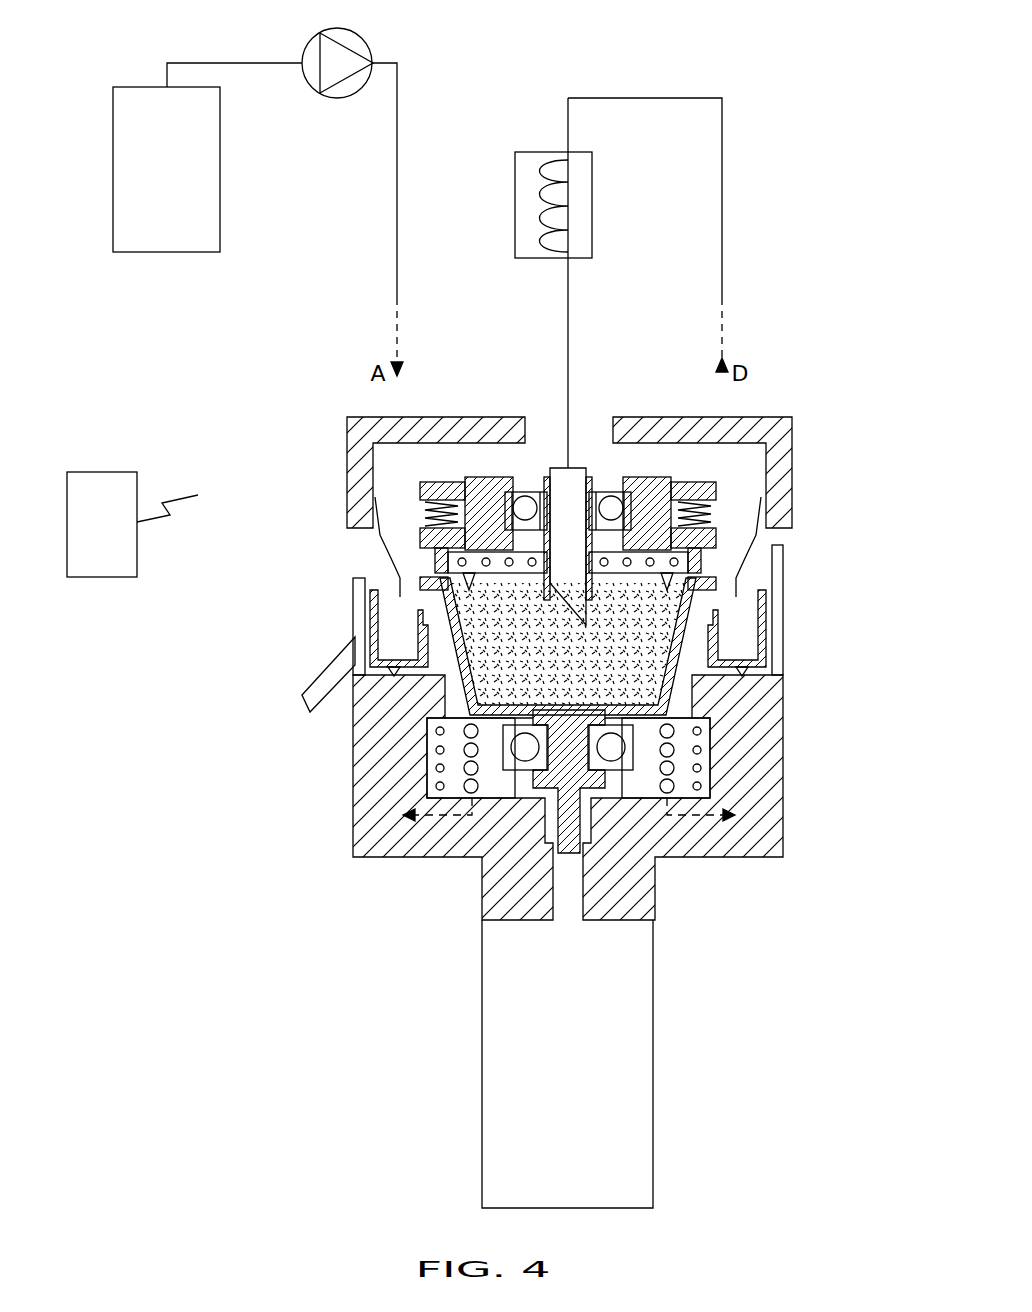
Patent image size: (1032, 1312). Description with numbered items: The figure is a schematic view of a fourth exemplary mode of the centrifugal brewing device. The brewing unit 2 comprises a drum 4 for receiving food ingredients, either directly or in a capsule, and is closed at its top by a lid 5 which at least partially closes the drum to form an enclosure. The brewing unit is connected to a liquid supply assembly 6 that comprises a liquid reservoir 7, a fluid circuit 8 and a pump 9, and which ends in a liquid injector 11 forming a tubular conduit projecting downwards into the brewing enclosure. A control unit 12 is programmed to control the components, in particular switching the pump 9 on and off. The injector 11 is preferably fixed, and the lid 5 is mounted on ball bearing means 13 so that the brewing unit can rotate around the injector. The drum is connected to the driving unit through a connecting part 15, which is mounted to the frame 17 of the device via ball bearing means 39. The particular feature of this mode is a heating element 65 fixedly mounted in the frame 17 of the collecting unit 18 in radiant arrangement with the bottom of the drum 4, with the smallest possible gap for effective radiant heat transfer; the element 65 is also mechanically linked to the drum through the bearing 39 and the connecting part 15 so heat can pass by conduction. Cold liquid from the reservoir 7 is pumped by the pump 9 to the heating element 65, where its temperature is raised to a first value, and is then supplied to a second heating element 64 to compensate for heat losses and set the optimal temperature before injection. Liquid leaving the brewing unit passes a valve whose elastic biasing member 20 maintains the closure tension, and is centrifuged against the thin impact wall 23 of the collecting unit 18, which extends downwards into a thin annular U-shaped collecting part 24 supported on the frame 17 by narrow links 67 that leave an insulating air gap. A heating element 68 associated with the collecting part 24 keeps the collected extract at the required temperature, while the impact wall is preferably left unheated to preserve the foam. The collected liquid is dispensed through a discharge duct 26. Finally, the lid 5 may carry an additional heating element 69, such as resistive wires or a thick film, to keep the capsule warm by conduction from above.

The brewing unit 2 is at (297, 417).
The drum 4 is at (440, 590).
The lid 5 is at (486, 495).
The liquid supply assembly 6 is at (752, 137).
The liquid reservoir 7 is at (220, 97).
The fluid circuit 8 is at (243, 62).
The pump 9 is at (338, 98).
The liquid injector 11 is at (533, 405).
The control unit 12 is at (120, 592).
The ball bearing means 13 is at (612, 496).
The connecting part 15 is at (545, 783).
The frame 17 is at (767, 783).
The collecting unit 18 is at (294, 578).
The elastic biasing member 20 is at (707, 517).
The impact wall 23 is at (762, 597).
The U-shaped collecting part 24 is at (767, 610).
The discharge duct 26 is at (315, 716).
The ball bearing means 39 is at (627, 767).
The second heating element 64 is at (592, 165).
The heating element 65 is at (492, 790).
The narrow links 67 is at (737, 673).
The heating element 68 is at (423, 637).
The additional heating element 69 is at (683, 565).